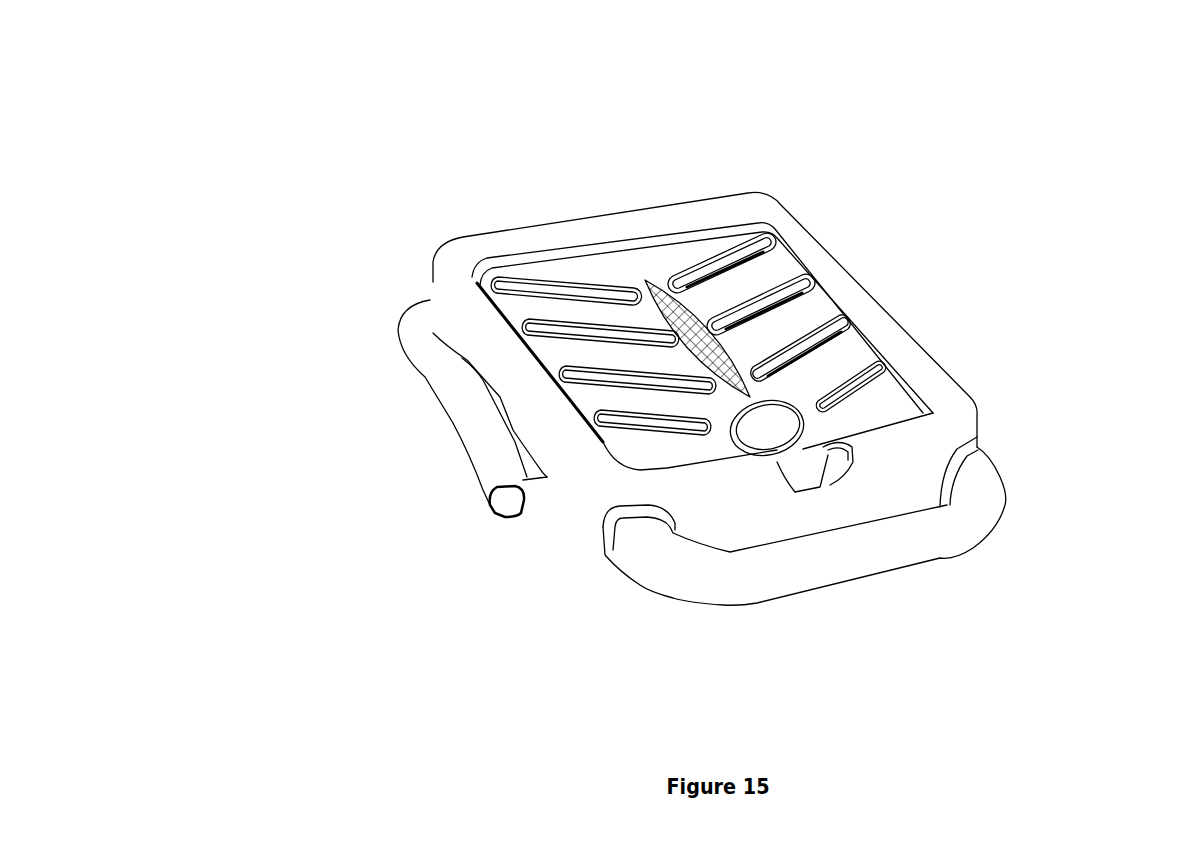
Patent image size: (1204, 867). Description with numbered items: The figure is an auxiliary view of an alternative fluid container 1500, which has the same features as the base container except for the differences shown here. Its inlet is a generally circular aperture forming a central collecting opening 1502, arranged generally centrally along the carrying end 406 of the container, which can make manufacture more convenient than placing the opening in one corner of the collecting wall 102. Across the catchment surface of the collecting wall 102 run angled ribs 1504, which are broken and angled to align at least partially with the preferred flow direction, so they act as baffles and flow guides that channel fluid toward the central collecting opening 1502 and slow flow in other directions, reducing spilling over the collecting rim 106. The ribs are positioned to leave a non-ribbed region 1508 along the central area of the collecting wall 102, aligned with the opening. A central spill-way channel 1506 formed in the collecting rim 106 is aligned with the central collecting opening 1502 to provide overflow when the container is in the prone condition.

The alternative fluid container 1500 is at (352, 160).
The angled ribs 1504 is at (828, 323).
The central collecting opening 1502 is at (778, 428).
The collecting rim 106 is at (892, 448).
The collecting wall 102 is at (610, 355).
The non-ribbed region 1508 is at (695, 337).
The central spill-way channel 1506 is at (808, 475).
The carrying end 406 is at (710, 620).